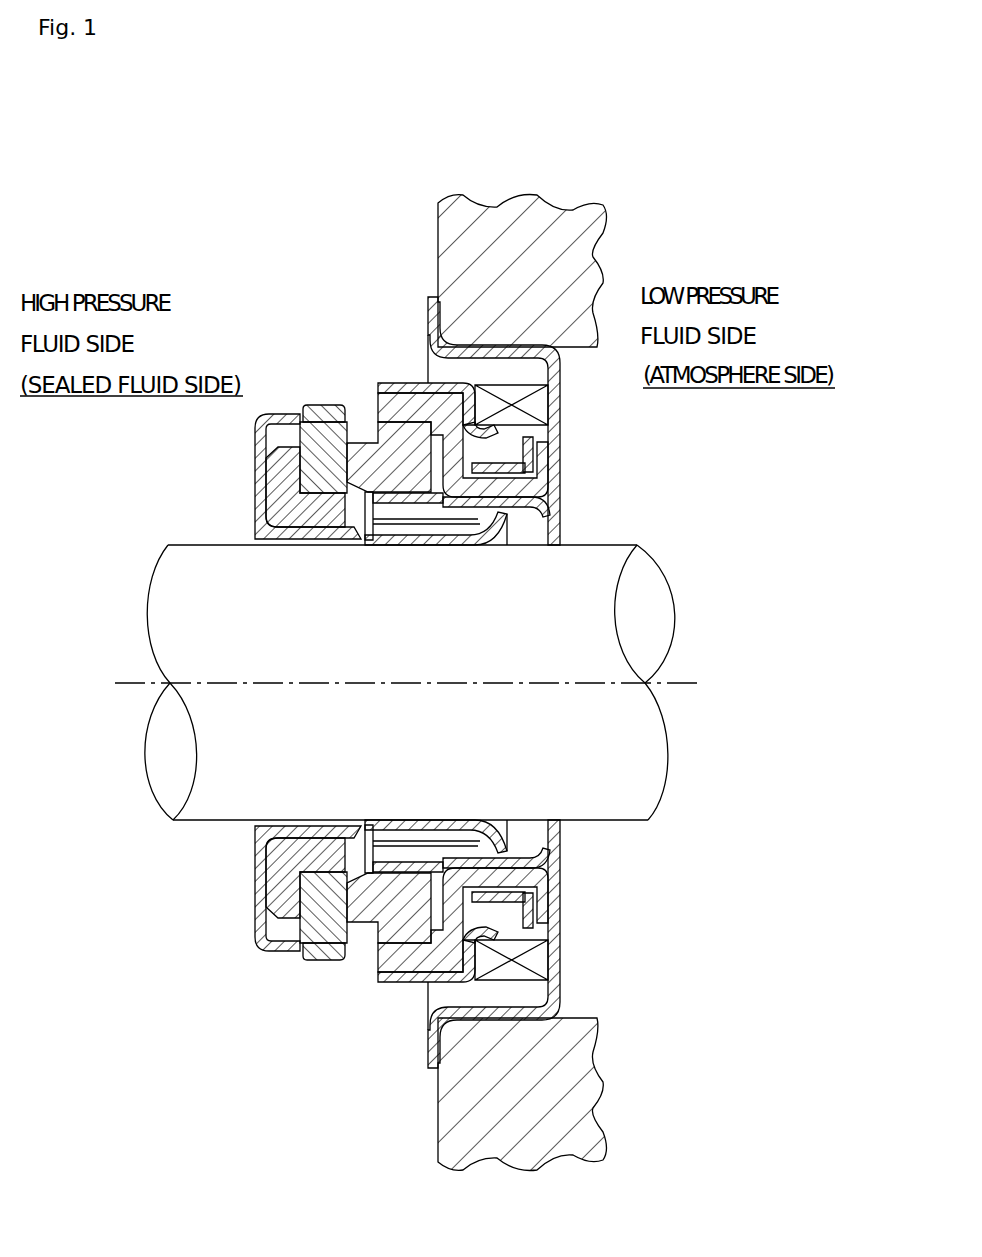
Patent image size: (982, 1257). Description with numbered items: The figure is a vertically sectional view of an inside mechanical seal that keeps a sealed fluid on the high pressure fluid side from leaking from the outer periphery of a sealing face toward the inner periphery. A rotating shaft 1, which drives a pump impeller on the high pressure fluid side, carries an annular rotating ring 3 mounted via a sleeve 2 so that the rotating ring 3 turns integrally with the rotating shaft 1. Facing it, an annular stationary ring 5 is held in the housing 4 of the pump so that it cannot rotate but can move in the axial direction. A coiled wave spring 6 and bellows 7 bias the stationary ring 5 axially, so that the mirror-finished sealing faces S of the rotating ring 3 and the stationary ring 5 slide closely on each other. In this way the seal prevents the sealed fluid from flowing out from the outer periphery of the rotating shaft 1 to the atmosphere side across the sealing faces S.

The rotating shaft 1 is at (308, 648).
The sleeve 2 is at (257, 488).
The rotating ring 3 is at (305, 428).
The housing 4 is at (510, 222).
The stationary ring 5 is at (387, 442).
The coiled wave spring 6 is at (542, 412).
The bellows 7 is at (430, 405).
The sealing faces S is at (349, 487).